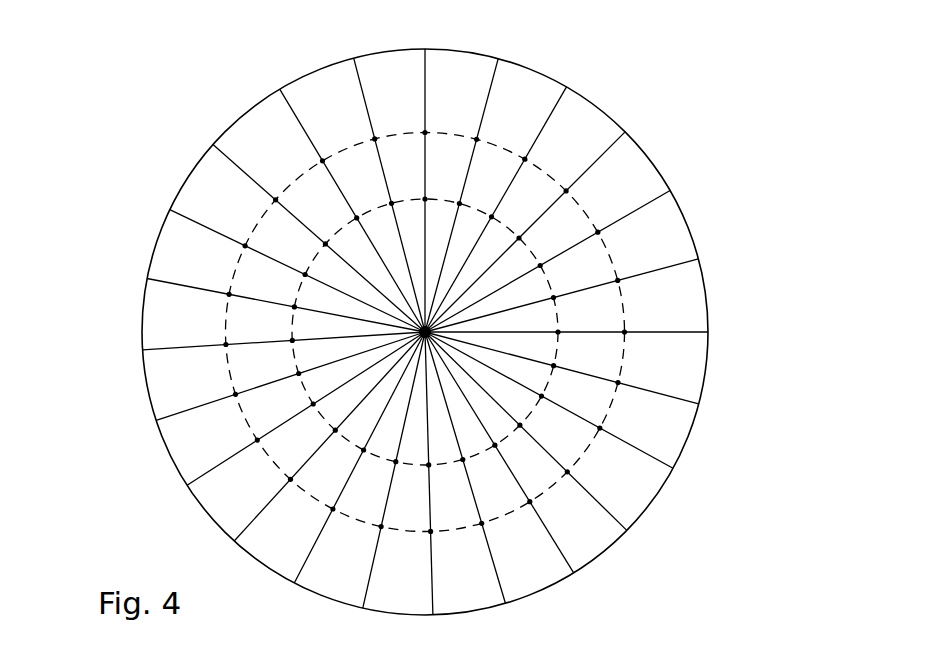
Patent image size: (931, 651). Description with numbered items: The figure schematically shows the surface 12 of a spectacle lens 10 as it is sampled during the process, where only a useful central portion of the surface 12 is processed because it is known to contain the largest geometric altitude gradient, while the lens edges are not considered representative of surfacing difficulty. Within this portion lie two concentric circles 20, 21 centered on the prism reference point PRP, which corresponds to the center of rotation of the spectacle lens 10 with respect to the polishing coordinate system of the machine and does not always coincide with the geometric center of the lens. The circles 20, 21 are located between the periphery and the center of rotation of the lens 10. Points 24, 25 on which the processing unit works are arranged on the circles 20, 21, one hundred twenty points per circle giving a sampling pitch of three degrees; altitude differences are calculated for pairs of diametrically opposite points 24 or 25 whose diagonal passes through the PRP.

The spectacle lens 10 is at (417, 345).
The surface 12 is at (636, 504).
The circle 20 is at (482, 445).
The circle 21 is at (557, 480).
The points 24 is at (626, 331).
The points 25 is at (563, 331).
The prism reference point PRP is at (425, 332).